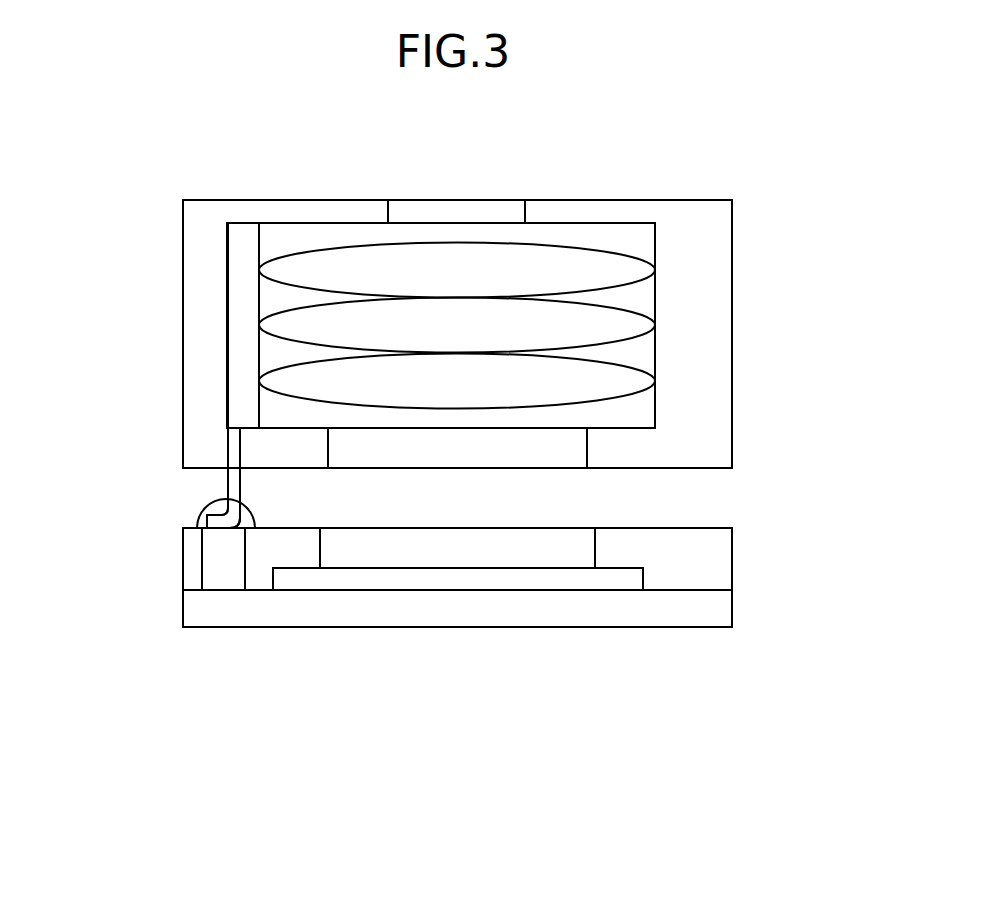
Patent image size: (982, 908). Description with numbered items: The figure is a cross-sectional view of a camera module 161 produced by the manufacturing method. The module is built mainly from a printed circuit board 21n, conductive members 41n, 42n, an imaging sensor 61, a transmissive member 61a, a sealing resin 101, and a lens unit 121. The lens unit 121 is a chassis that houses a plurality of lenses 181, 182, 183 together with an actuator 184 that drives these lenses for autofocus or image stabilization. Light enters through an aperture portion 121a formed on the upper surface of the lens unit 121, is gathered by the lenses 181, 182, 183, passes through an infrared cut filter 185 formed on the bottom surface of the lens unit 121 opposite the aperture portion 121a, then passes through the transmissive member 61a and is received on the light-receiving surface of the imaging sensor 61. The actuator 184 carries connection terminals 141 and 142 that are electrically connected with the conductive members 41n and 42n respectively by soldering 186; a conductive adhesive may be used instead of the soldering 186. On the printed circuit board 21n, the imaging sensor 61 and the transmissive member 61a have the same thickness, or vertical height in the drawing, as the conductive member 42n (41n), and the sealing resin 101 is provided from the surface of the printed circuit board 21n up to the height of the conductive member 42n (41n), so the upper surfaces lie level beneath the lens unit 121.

The lens unit 121 is at (690, 222).
The aperture portion 121a is at (457, 212).
The lens 181 is at (627, 270).
The lens 182 is at (627, 323).
The lens 183 is at (627, 382).
The actuator 184 is at (238, 308).
The infrared cut filter 185 is at (562, 450).
The soldering 186 is at (205, 508).
The connection terminal 142 is at (228, 483).
The connection terminal 141 is at (223, 375).
The sealing resin 101 is at (693, 557).
The printed circuit board 21n is at (693, 605).
The conductive member 42n is at (217, 557).
The conductive member 41n is at (223, 559).
The imaging sensor 61 is at (478, 578).
The transmissive member 61a is at (407, 553).
The camera module 161 is at (615, 685).